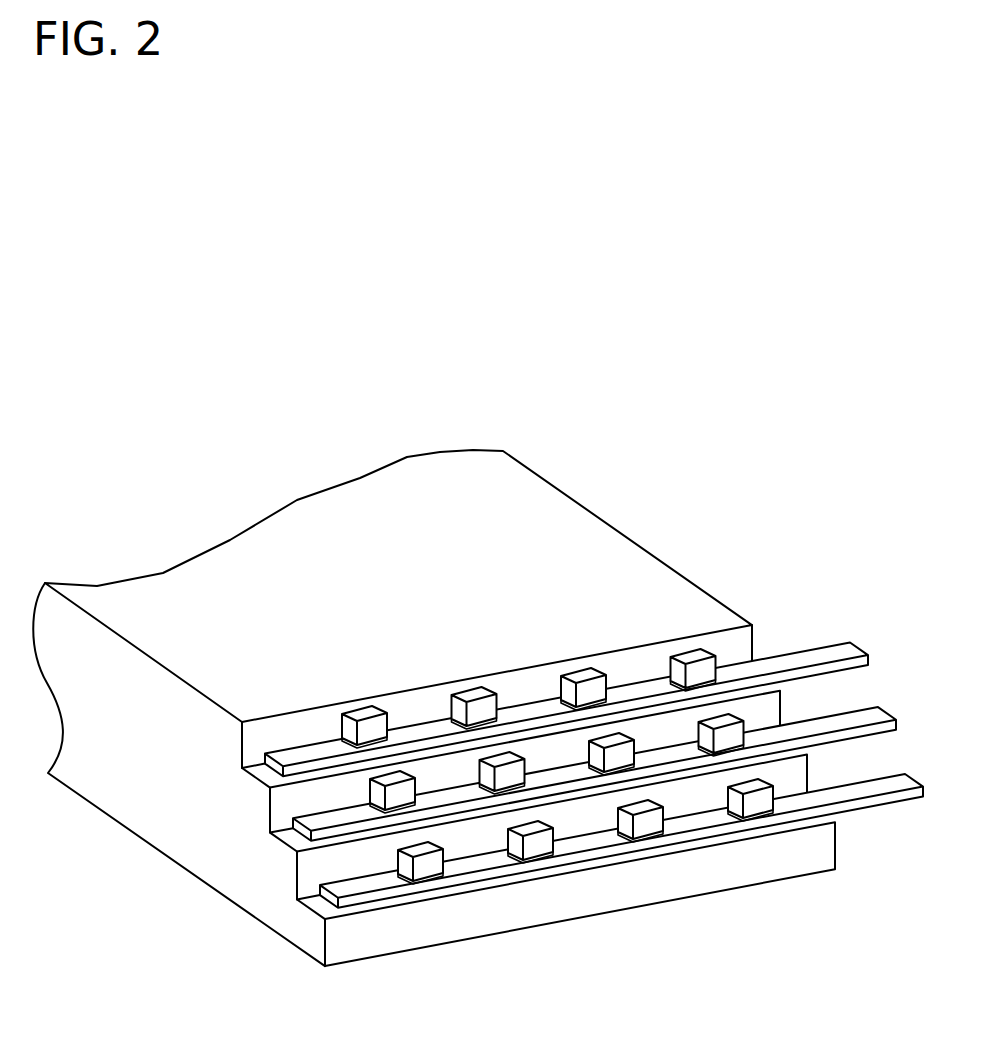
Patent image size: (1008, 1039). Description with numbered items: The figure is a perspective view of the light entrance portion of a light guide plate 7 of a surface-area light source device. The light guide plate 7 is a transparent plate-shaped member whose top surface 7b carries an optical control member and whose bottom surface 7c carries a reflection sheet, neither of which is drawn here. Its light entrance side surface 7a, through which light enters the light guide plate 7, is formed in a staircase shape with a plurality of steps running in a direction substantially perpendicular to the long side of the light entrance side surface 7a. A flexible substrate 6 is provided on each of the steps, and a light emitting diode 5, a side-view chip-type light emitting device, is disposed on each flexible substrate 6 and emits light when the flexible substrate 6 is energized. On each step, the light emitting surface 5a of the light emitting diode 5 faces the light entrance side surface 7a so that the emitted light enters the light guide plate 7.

The light emitting diode 5 is at (447, 856).
The light emitting surface 5a is at (398, 862).
The flexible substrate 6 is at (923, 797).
The light guide plate 7 is at (434, 708).
The light entrance side surface 7a is at (577, 818).
The top surface 7b is at (358, 535).
The bottom surface 7c is at (138, 838).